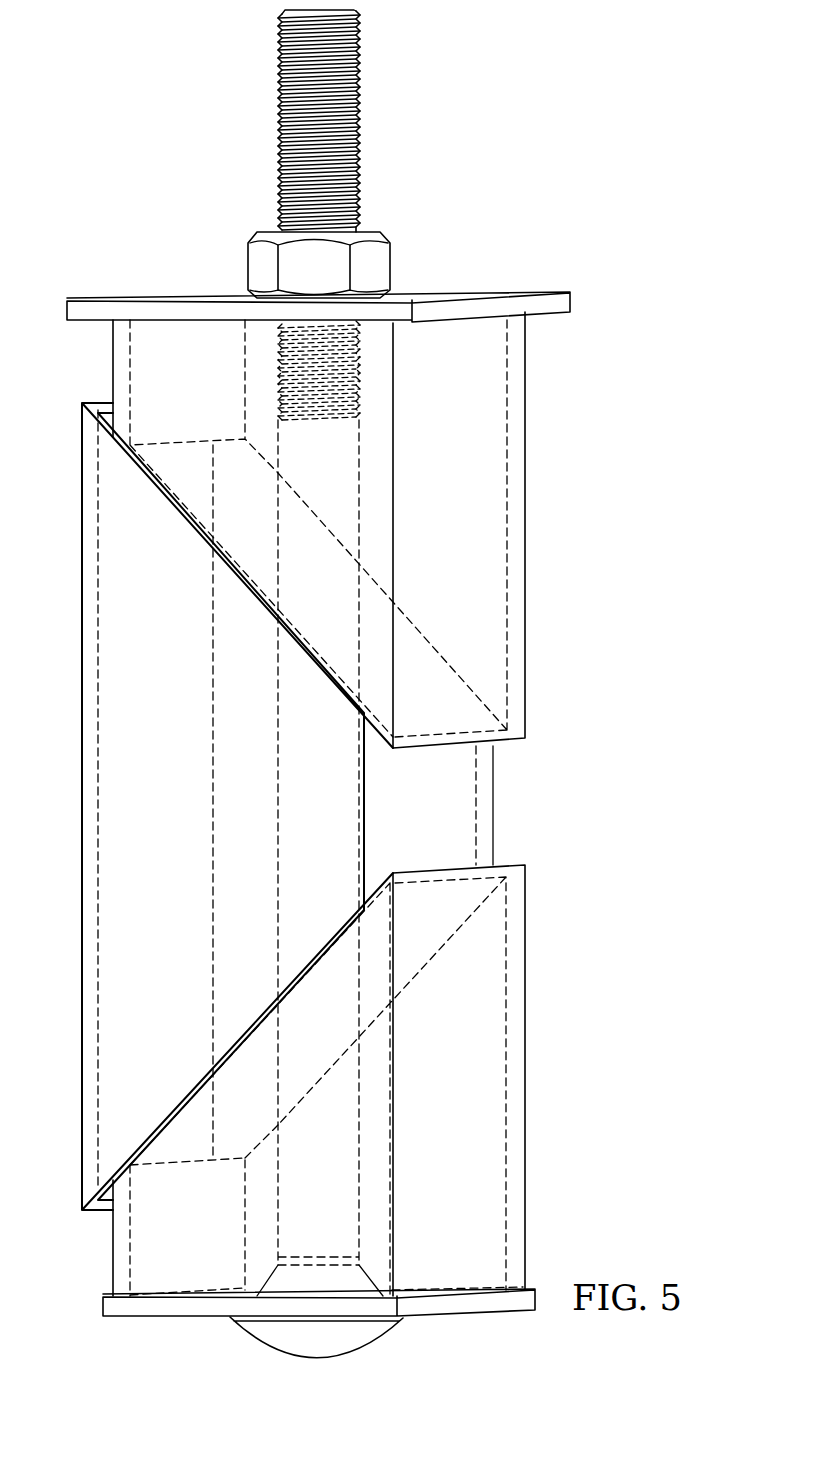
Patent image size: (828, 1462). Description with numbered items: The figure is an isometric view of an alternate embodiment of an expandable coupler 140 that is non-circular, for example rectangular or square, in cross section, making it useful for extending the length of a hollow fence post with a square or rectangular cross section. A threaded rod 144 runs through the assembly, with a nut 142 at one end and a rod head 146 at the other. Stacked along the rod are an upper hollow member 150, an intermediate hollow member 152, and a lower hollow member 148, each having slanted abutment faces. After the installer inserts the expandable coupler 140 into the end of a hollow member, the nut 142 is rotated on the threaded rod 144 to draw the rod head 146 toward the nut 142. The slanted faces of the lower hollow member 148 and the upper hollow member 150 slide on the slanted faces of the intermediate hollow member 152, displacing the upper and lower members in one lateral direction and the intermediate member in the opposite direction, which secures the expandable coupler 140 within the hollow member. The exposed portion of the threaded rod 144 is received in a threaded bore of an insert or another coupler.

The expandable coupler 140 is at (372, 698).
The nut 142 is at (392, 258).
The threaded rod 144 is at (360, 493).
The rod head 146 is at (395, 1325).
The lower hollow member 148 is at (525, 1077).
The upper hollow member 150 is at (525, 527).
The intermediate hollow member 152 is at (493, 803).